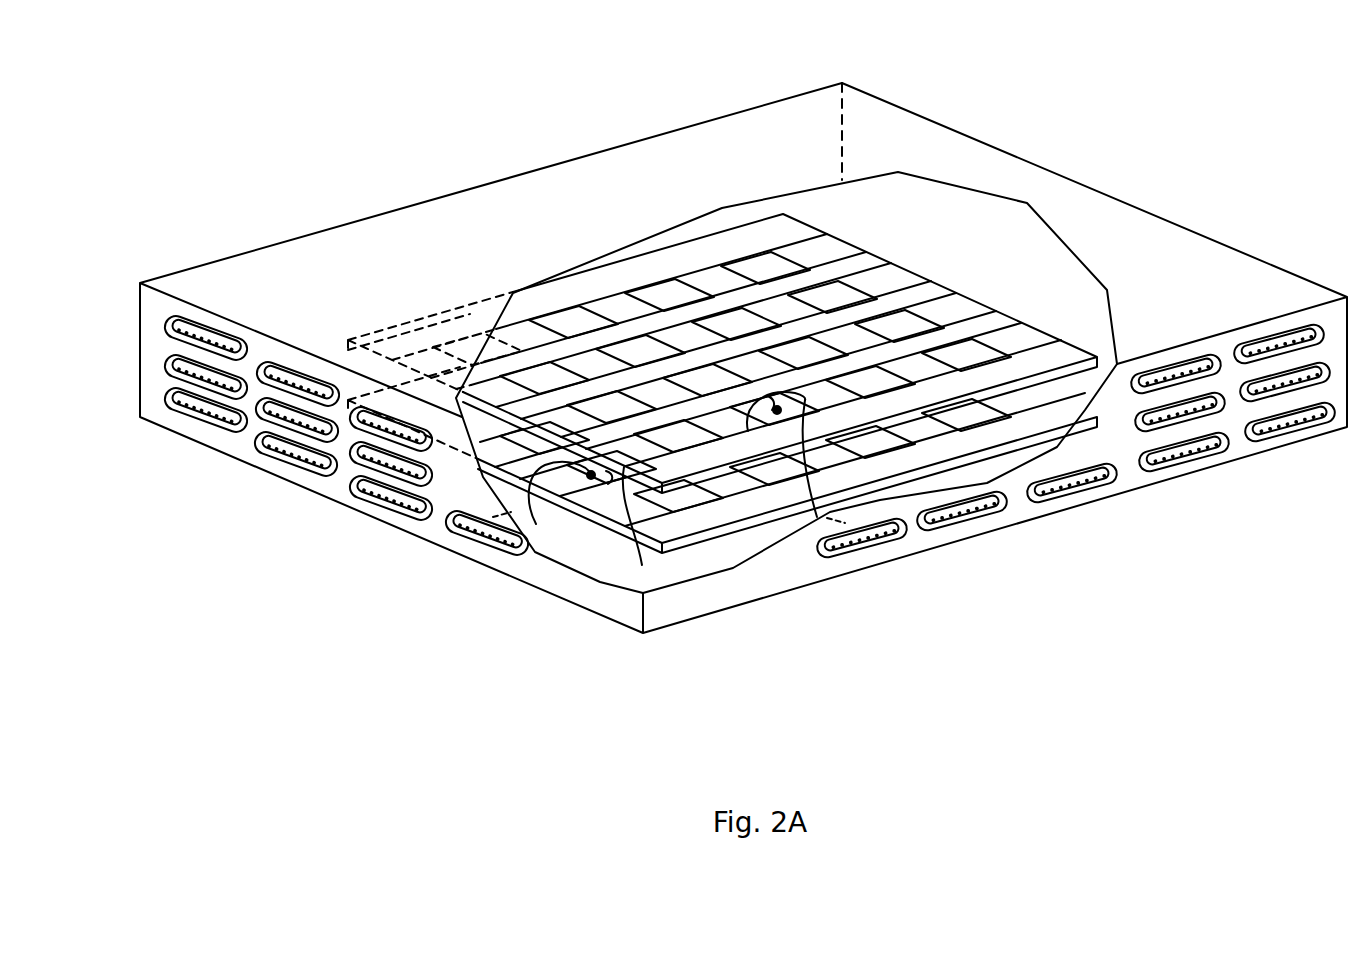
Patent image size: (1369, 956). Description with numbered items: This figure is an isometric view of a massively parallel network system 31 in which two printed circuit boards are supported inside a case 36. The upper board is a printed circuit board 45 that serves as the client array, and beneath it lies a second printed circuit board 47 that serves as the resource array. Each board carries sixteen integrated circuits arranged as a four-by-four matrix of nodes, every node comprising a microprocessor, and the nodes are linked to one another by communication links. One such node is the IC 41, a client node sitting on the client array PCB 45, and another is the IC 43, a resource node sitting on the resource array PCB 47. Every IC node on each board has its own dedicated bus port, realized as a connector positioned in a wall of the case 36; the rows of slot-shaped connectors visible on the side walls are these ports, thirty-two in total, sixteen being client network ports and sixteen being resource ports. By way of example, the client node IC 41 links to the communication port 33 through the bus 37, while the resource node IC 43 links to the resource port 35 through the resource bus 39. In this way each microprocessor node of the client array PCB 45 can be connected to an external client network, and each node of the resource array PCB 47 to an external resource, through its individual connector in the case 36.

The massively parallel network system 31 is at (743, 333).
The communication port 33 is at (875, 550).
The resource port 35 is at (450, 518).
The case 36 is at (539, 166).
The bus 37 is at (817, 517).
The resource bus 39 is at (544, 505).
The IC 41 is at (767, 423).
The IC 43 is at (641, 524).
The printed circuit board 45 is at (860, 268).
The printed circuit board 47 is at (590, 522).